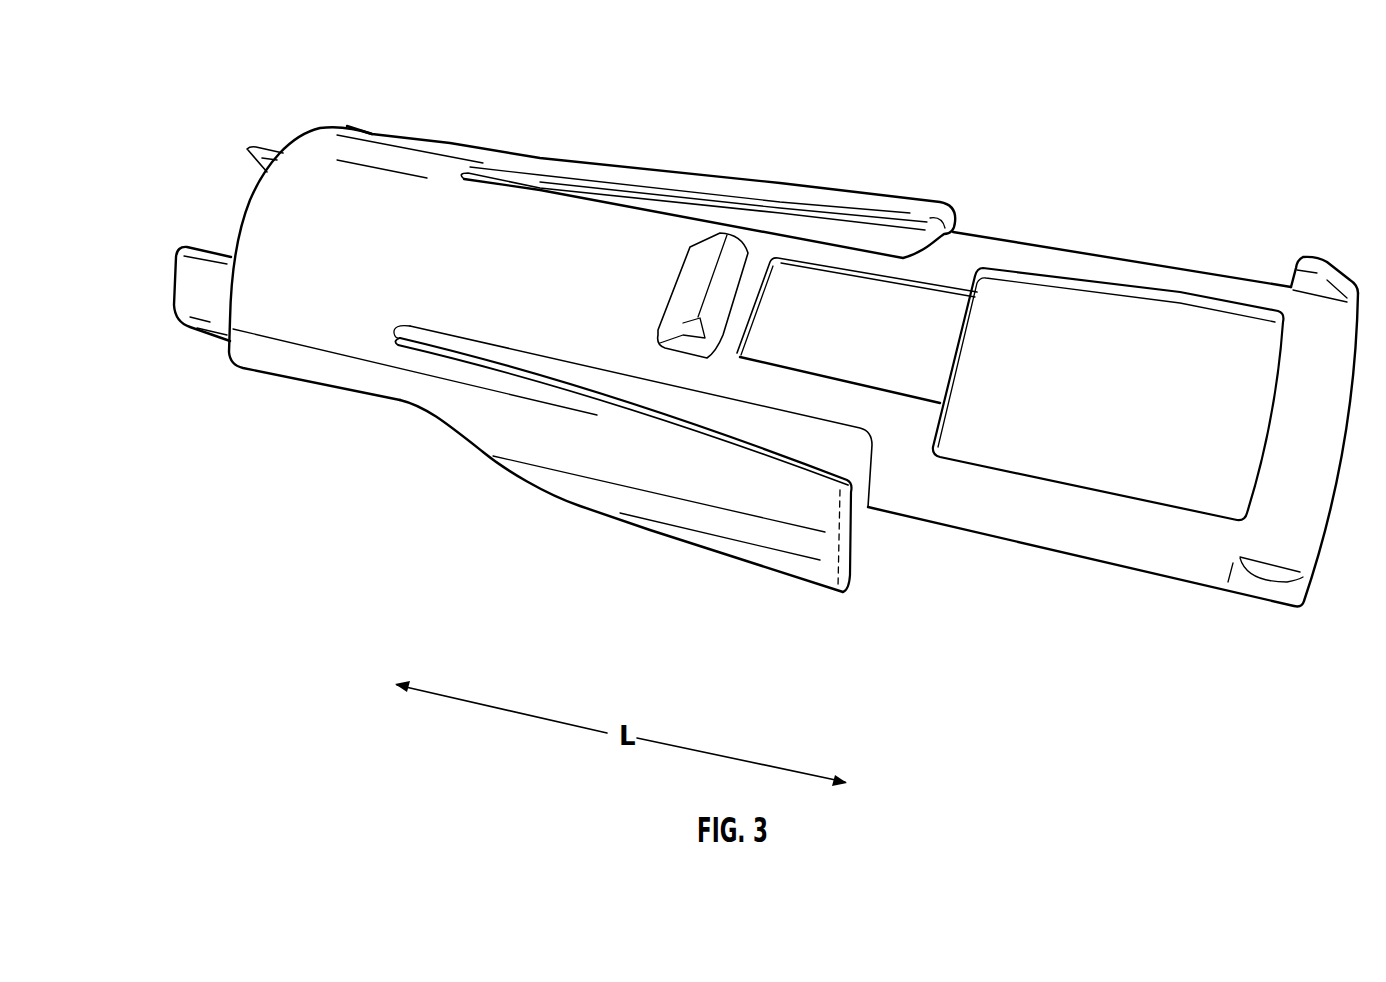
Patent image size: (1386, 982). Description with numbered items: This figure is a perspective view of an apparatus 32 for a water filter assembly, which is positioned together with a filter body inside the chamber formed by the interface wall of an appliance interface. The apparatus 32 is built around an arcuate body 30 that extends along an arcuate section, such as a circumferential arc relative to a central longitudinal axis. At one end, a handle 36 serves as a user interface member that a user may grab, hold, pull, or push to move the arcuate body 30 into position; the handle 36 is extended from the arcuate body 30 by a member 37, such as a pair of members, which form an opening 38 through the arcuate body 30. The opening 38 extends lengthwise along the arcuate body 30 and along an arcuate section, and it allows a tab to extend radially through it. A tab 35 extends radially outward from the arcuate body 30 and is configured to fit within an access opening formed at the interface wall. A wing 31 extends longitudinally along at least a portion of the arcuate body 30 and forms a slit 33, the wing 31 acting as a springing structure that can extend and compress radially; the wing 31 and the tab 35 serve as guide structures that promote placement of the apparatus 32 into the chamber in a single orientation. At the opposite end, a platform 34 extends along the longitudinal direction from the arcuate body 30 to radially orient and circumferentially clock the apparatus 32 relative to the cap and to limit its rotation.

The arcuate body 30 is at (328, 190).
The wing 31 is at (667, 507).
The apparatus 32 is at (587, 98).
The slit 33 is at (802, 456).
The platform 34 is at (205, 303).
The tab 35 is at (698, 270).
The handle 36 is at (1297, 540).
The member 37 is at (1050, 517).
The opening 38 is at (1082, 316).